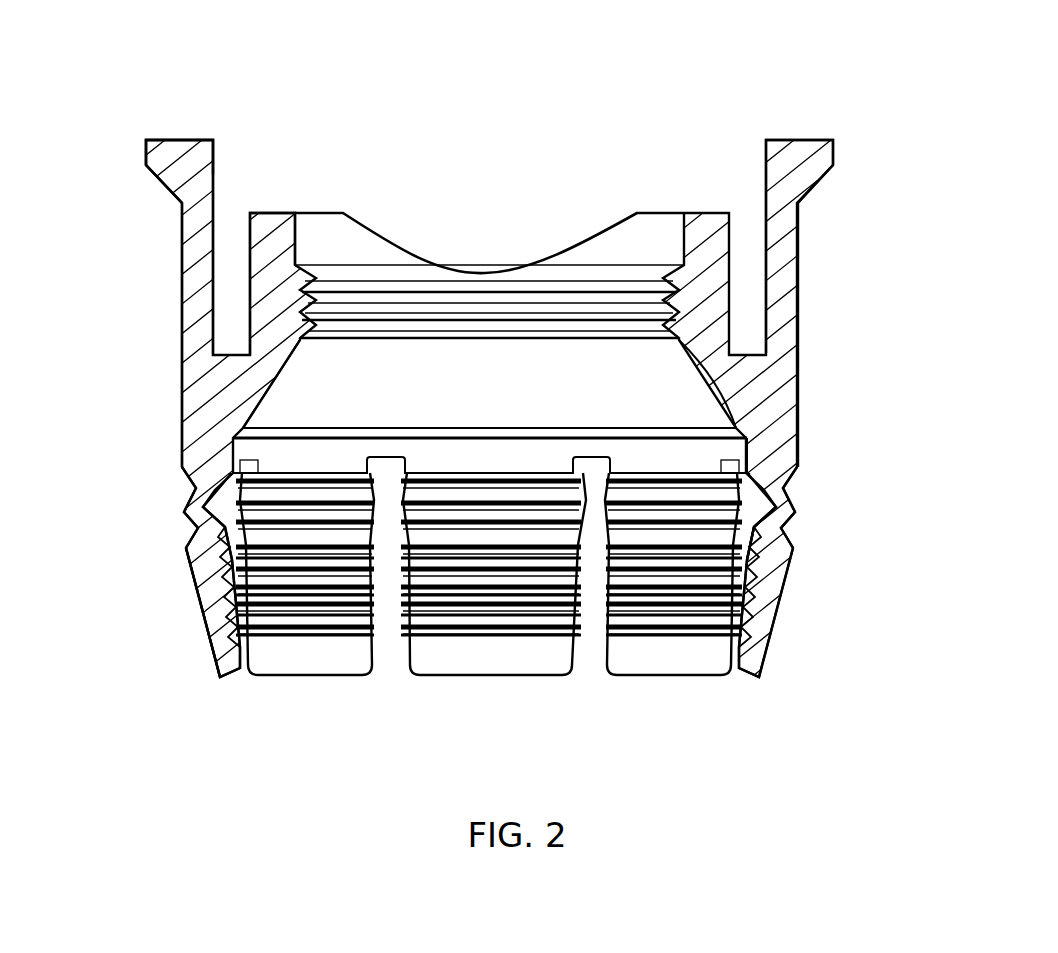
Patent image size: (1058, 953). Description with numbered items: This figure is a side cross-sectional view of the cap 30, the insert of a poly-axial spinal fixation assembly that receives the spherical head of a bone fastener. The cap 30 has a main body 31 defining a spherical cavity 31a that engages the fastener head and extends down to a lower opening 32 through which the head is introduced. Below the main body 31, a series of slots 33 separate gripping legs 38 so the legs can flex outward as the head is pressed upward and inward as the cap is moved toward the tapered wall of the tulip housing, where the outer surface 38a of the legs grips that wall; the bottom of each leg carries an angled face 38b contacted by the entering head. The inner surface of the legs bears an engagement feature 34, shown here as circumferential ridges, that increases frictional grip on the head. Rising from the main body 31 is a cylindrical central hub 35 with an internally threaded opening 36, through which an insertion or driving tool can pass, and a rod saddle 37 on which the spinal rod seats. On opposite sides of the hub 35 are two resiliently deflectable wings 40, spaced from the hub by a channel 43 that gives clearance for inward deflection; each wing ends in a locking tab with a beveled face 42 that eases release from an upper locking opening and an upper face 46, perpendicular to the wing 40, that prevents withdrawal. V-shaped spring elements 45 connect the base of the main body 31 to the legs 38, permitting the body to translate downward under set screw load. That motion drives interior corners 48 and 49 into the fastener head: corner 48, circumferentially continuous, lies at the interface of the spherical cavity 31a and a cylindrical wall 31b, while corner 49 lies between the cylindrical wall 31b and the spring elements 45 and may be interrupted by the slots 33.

The cap 30 is at (182, 426).
The main body 31 is at (218, 383).
The spherical cavity 31a is at (490, 392).
The cylindrical wall 31b is at (663, 463).
The lower opening 32 is at (340, 660).
The slots 33 is at (400, 677).
The engagement feature 34 is at (652, 612).
The cylindrical central hub 35 is at (272, 208).
The internally threaded opening 36 is at (618, 292).
The rod saddle 37 is at (373, 228).
The gripping legs 38 is at (222, 652).
The outer surface of the legs 38a is at (190, 583).
The angled face 38b is at (300, 677).
The resiliently deflectable wings 40 is at (193, 250).
The beveled face 42 is at (177, 202).
The channel 43 is at (752, 340).
The spring elements 45 is at (200, 507).
The upper face 46 is at (182, 136).
The circumferential corner 48 is at (760, 402).
The circumferential corner 49 is at (772, 478).